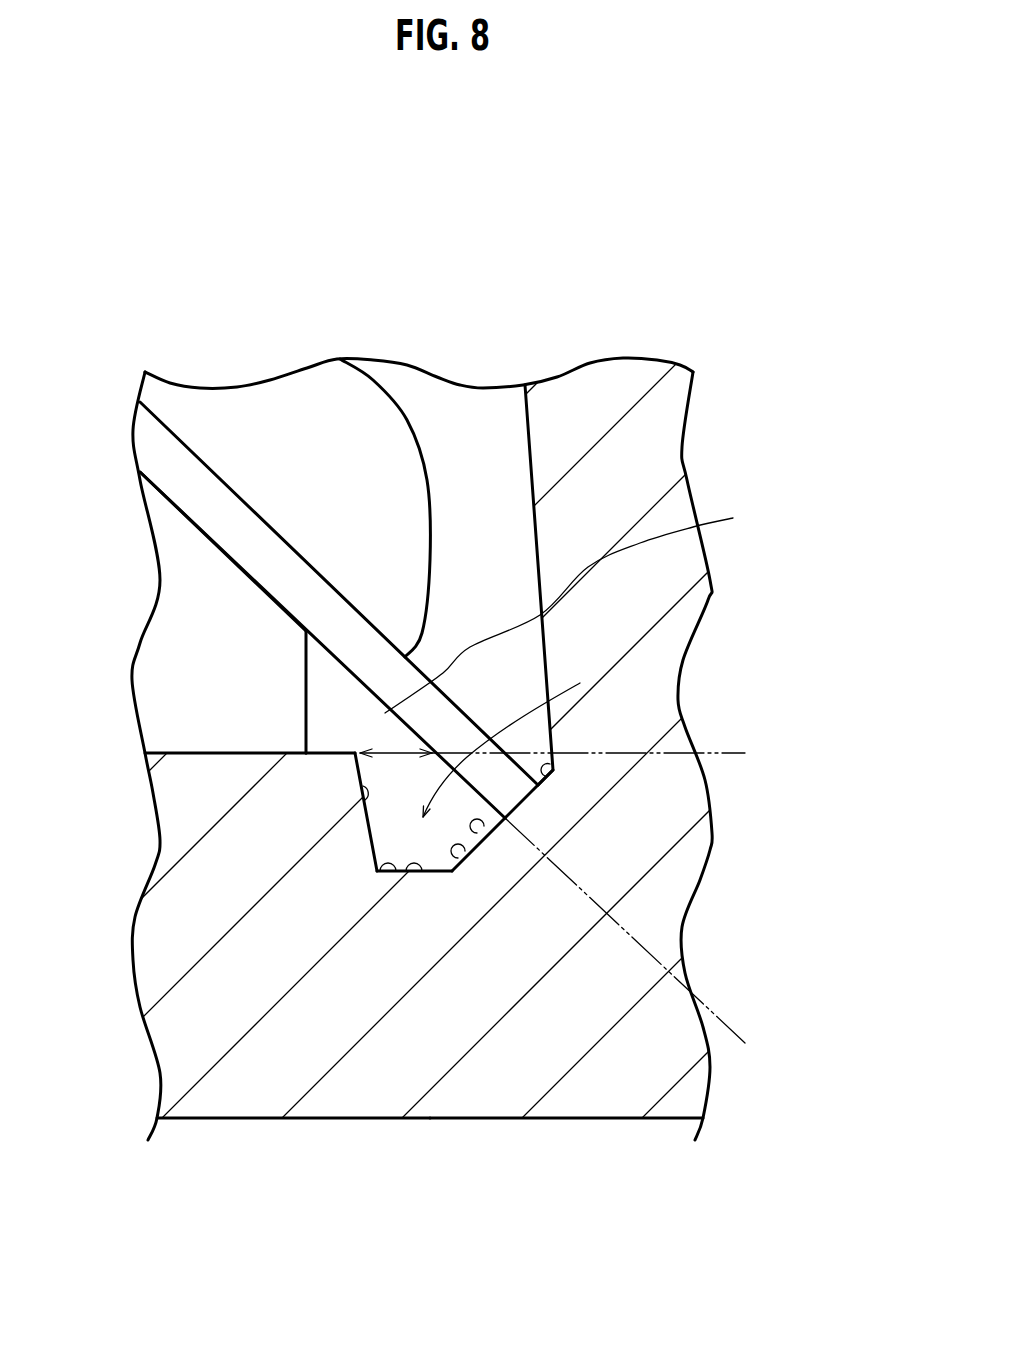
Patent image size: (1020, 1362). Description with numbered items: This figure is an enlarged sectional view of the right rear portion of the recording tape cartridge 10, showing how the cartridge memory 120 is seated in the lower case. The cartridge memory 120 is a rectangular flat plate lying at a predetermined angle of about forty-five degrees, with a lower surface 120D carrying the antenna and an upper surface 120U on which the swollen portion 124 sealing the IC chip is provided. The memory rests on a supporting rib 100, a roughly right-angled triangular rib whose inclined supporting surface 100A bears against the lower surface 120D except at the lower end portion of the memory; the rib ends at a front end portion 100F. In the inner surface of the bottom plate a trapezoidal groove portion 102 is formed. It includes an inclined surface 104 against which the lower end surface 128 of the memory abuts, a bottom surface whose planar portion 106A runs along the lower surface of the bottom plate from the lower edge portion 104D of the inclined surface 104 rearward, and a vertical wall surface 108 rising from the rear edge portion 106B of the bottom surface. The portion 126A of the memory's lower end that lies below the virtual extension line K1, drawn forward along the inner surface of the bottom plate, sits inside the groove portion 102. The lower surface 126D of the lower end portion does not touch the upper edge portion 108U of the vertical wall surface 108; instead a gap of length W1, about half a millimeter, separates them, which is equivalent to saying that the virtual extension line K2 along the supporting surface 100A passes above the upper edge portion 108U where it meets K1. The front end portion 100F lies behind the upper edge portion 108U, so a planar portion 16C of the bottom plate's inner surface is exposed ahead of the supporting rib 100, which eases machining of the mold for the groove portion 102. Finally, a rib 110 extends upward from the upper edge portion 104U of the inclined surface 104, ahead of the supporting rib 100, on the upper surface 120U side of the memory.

The recording tape cartridge 10 is at (730, 347).
The supporting rib 100 is at (183, 567).
The supporting surface 100A is at (215, 540).
The front end portion 100F is at (308, 667).
The groove portion 102 is at (690, 637).
The inclined surface 104 is at (480, 832).
The lower edge portion 104D is at (466, 860).
The upper edge portion 104U is at (550, 764).
The planar portion 106A is at (414, 871).
The rear edge portion 106B is at (388, 871).
The vertical wall surface 108 is at (365, 800).
The upper edge portion 108U is at (354, 753).
The rib 110 is at (592, 403).
The cartridge memory 120 is at (372, 385).
The upper surface 120U is at (277, 527).
The lower surface 120D is at (247, 575).
The swollen portion 124 is at (383, 447).
The portion of lower end portion 126A is at (503, 787).
The lower surface of lower end portion 126D is at (589, 606).
The lower end surface 128 is at (520, 803).
The planar portion 16C is at (318, 753).
The length of gap W1 is at (383, 753).
The virtual extension line K1 is at (679, 753).
The virtual extension line K2 is at (622, 930).